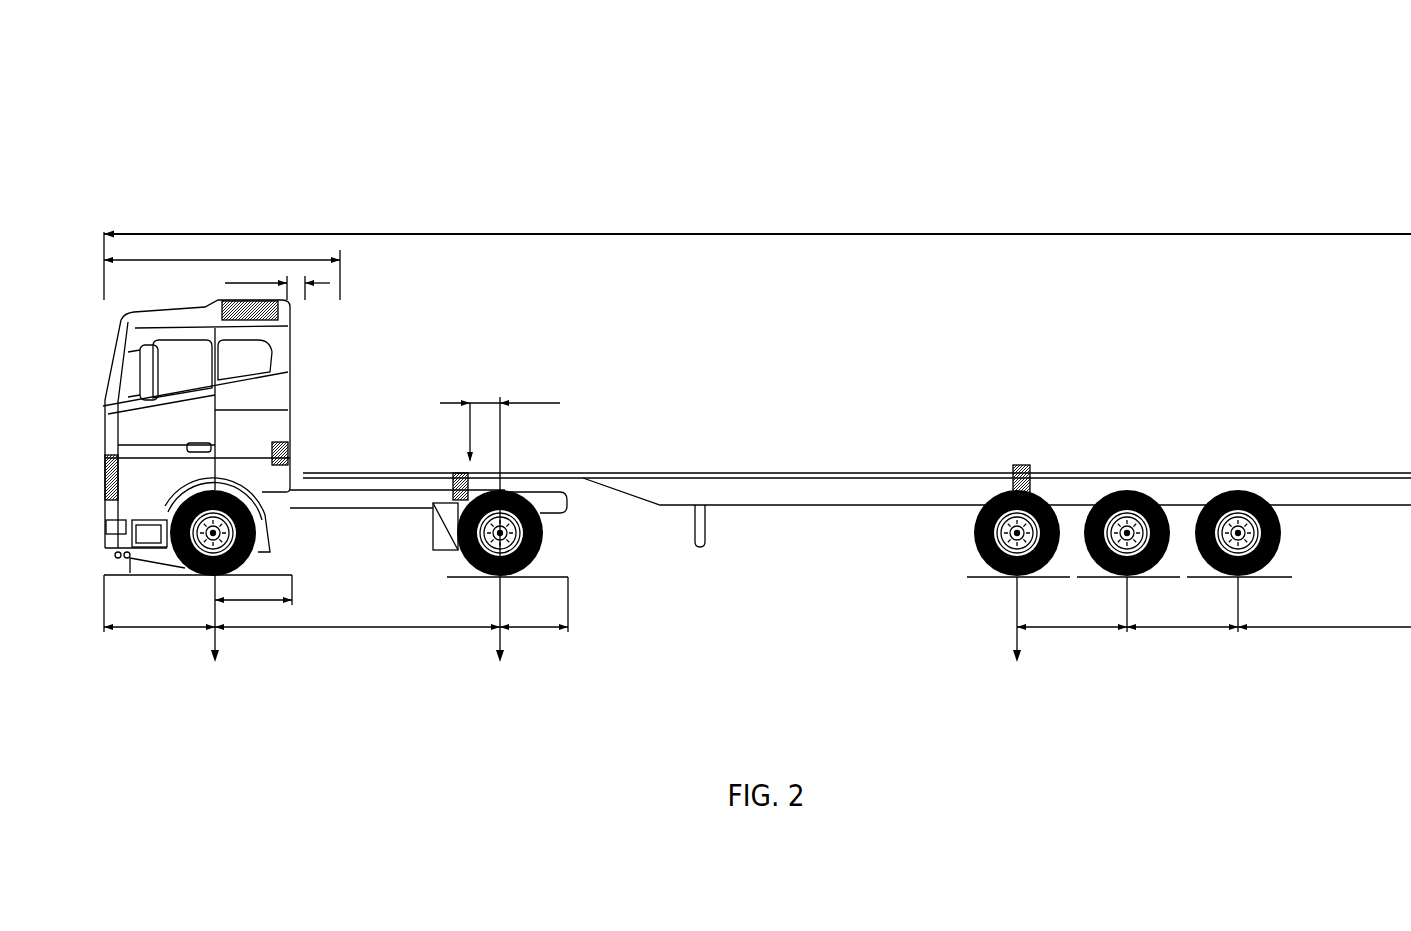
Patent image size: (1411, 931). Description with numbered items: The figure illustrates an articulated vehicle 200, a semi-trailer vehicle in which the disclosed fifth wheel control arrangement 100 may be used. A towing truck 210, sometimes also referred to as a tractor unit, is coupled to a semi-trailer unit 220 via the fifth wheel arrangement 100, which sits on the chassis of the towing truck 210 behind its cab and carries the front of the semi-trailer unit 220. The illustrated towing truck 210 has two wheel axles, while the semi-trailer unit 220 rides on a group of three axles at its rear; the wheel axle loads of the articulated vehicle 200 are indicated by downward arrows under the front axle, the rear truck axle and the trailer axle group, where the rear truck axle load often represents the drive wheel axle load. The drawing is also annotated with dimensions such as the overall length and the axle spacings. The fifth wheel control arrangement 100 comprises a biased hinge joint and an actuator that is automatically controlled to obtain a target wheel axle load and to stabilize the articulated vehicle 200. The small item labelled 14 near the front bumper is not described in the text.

The articulated vehicle 200 is at (1199, 150).
The towing truck 210 is at (379, 399).
The semi-trailer unit 220 is at (837, 487).
The fifth wheel control arrangement 100 is at (523, 486).
The sensor arrangement 14 is at (137, 563).